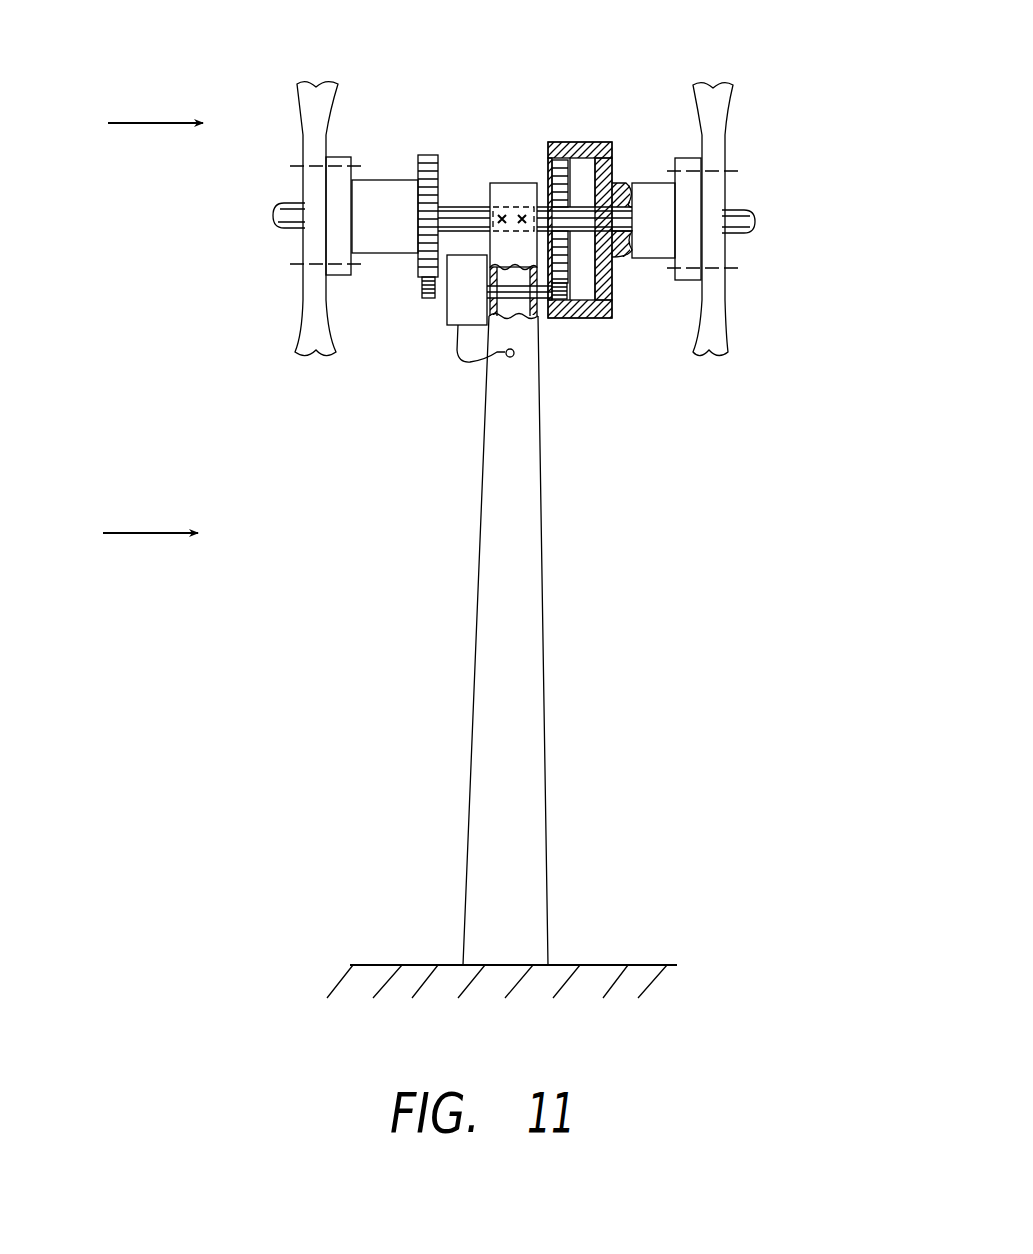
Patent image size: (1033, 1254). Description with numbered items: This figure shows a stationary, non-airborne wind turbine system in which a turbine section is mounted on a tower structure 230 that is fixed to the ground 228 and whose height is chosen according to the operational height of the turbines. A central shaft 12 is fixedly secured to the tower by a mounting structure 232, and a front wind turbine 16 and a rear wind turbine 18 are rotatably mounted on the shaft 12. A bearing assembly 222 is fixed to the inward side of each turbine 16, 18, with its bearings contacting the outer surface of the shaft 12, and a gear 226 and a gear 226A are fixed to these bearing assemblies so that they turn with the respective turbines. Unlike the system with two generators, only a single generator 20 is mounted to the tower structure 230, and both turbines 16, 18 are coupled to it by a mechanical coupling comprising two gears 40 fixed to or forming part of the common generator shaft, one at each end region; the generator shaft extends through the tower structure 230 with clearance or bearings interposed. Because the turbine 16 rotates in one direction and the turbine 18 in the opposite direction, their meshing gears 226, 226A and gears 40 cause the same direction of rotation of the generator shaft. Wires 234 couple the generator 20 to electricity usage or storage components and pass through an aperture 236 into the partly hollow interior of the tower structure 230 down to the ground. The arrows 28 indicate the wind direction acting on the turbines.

The central shaft 12 is at (292, 205).
The front wind turbine 16 is at (298, 342).
The rear wind turbine 18 is at (727, 345).
The generator 20 is at (450, 330).
The wind direction 28 is at (178, 122).
The gear 40 is at (420, 297).
The bearing assembly 222 is at (393, 168).
The gear 226 is at (433, 156).
The gear 226A is at (592, 162).
The ground 228 is at (593, 965).
The tower structure 230 is at (540, 505).
The mounting structure 232 is at (522, 212).
The wires 234 is at (478, 360).
The aperture 236 is at (507, 357).